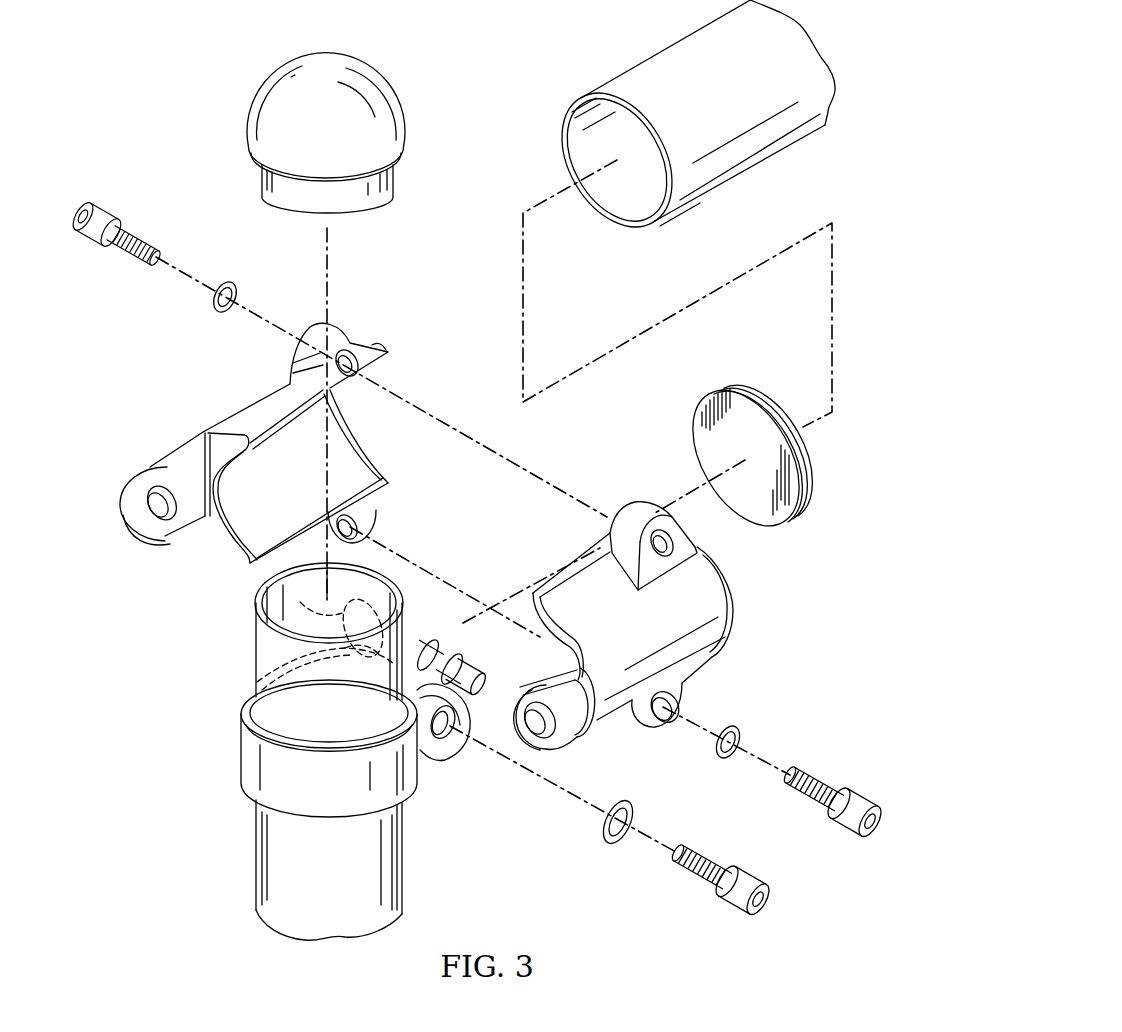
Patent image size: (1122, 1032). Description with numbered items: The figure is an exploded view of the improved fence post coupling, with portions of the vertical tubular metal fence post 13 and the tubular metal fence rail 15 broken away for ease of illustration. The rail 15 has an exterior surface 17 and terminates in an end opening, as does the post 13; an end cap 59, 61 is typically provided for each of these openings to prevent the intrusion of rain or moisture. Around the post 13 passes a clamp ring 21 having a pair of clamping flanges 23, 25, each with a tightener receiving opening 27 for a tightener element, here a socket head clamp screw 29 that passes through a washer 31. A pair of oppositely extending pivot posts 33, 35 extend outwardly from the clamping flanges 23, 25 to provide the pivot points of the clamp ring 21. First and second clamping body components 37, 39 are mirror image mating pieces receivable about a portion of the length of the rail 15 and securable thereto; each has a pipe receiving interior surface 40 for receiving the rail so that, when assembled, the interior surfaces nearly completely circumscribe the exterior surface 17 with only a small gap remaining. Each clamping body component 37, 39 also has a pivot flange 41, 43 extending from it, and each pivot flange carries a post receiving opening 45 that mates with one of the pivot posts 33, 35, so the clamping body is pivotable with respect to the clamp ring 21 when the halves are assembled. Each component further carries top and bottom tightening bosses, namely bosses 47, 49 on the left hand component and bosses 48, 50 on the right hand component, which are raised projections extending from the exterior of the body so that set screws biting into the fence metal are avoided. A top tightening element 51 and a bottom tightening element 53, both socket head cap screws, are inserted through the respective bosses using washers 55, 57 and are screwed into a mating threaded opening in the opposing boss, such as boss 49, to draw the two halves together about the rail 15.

The vertical tubular metal fence post 13 is at (256, 850).
The tubular metal fence rail 15 is at (770, 172).
The exterior surface 17 is at (667, 58).
The clamp ring 21 is at (315, 803).
The clamping flange 23 is at (345, 663).
The clamping flange 25 is at (400, 680).
The tightener receiving opening 27 is at (438, 745).
The socket head clamp screw 29 is at (765, 918).
The washer 31 is at (612, 842).
The pivot post 33 is at (490, 683).
The pivot post 35 is at (330, 622).
The first clamping body component 37 is at (278, 431).
The second clamping body component 39 is at (636, 626).
The pipe receiving interior surface 40 is at (372, 470).
The pivot flange 41 is at (190, 512).
The pivot flange 43 is at (585, 730).
The post receiving opening 45 is at (545, 745).
The top tightening boss 47 is at (318, 336).
The top tightening boss 48 is at (640, 500).
The bottom tightening boss 49 is at (366, 527).
The bottom tightening boss 50 is at (655, 727).
The top tightening element 51 is at (93, 210).
The bottom tightening element 53 is at (848, 788).
The washer 55 is at (578, 145).
The washer 57 is at (223, 285).
The end cap 59 is at (757, 522).
The end cap 61 is at (320, 62).